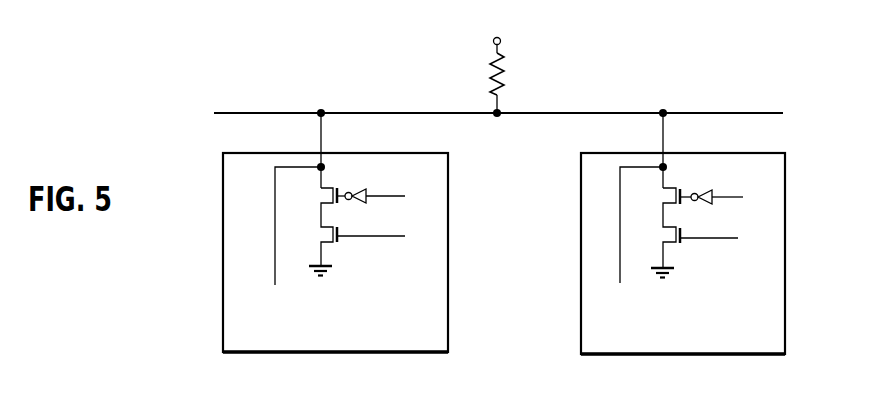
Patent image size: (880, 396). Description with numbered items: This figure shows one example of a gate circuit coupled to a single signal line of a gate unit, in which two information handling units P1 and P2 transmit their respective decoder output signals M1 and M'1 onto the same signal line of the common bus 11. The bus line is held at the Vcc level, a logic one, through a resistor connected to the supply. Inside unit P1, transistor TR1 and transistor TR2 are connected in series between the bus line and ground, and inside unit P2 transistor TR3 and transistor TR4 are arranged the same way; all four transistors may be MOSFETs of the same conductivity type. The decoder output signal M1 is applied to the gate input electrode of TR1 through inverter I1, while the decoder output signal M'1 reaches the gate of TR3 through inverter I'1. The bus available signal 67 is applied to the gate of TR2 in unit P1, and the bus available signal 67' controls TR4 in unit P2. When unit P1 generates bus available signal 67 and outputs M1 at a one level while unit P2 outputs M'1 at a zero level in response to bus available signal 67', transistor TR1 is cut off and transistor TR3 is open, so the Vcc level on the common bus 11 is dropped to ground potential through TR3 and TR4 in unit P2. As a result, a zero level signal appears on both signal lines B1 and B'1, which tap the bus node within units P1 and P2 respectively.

The common bus 11 is at (262, 112).
The supply voltage level Vcc is at (512, 71).
The information handling unit P1 is at (447, 343).
The information handling unit P2 is at (784, 345).
The signal line B1 is at (273, 244).
The signal line B'1 is at (625, 225).
The transistor TR1 is at (322, 193).
The transistor TR2 is at (322, 234).
The transistor TR3 is at (665, 194).
The transistor TR4 is at (665, 235).
The inverter I1 is at (361, 187).
The inverter I'1 is at (723, 183).
The decoder output signal M1 is at (396, 199).
The decoder output signal M'1 is at (740, 206).
The bus available signal 67 is at (380, 251).
The bus available signal 67' is at (722, 252).